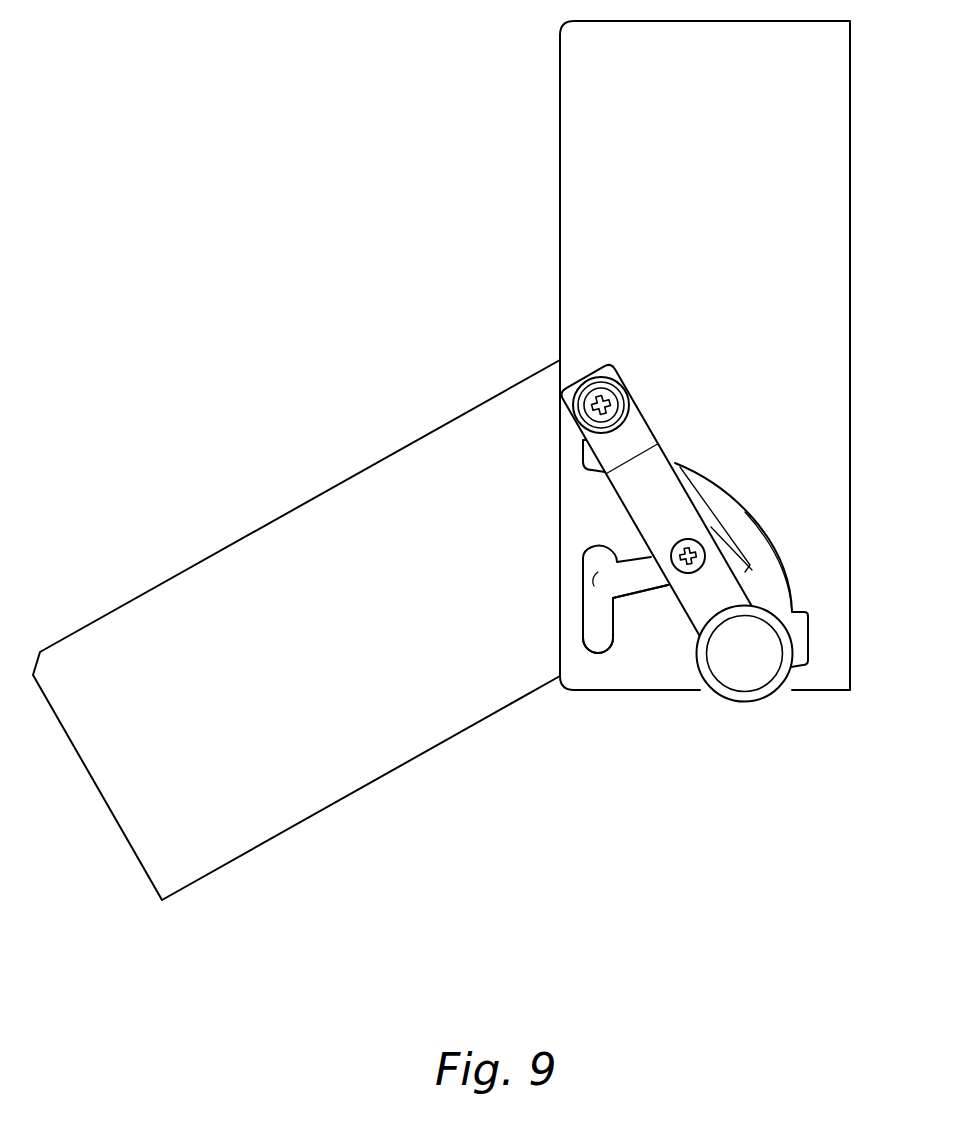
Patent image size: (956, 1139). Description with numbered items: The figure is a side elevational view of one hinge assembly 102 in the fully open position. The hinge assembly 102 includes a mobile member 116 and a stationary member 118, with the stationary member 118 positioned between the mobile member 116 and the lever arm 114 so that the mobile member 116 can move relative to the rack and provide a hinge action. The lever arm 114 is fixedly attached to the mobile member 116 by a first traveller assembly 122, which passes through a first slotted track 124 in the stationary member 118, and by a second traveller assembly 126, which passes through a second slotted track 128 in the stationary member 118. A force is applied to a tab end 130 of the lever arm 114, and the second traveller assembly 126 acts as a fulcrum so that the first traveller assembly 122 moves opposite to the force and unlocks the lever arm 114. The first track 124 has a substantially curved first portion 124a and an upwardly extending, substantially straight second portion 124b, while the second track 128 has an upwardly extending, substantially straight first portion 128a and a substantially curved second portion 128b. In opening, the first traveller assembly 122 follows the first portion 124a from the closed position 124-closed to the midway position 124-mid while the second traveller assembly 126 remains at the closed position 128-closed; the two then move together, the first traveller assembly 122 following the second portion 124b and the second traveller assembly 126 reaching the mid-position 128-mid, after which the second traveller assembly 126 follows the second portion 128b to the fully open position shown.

The hinge assembly 102 is at (258, 124).
The lever arm 114 is at (650, 425).
The mobile member 116 is at (226, 578).
The stationary member 118 is at (583, 90).
The first traveller assembly 122 is at (672, 542).
The first slotted track 124 is at (725, 495).
The first portion of the first track 124a is at (770, 547).
The second portion of the first track 124b is at (583, 452).
The midway position of the first track 124-mid is at (598, 478).
The closed position of the first track 124-closed is at (800, 650).
The second traveller assembly 126 is at (591, 387).
The second slotted track 128 is at (583, 555).
The first portion of the second track 128a is at (583, 620).
The second portion of the second track 128b is at (653, 597).
The mid-position of the second track 128-mid is at (583, 590).
The closed position of the second track 128-closed is at (598, 655).
The tab end 130 is at (747, 672).